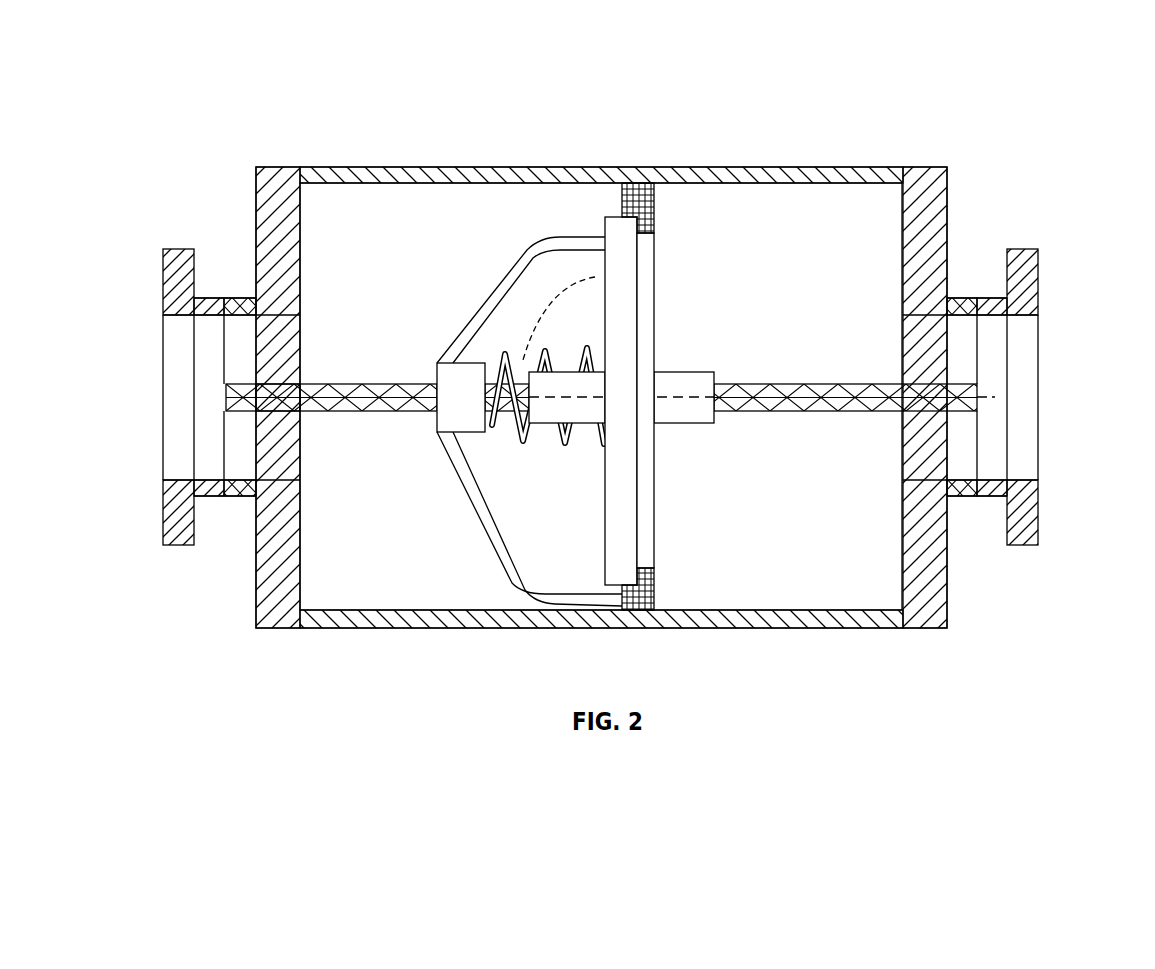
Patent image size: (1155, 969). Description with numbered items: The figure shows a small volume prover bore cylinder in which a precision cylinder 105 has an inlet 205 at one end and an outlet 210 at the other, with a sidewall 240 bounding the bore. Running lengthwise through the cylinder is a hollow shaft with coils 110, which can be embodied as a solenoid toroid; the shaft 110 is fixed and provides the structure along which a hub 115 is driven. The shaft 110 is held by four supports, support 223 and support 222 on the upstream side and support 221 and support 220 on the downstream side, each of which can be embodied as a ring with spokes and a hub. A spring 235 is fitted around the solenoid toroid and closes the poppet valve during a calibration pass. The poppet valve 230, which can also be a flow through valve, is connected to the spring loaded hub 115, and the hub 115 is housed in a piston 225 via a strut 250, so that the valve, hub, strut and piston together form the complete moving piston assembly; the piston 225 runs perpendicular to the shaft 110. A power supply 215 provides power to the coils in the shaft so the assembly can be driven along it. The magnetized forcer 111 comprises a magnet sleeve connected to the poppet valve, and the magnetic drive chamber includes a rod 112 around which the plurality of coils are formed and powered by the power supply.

The precision cylinder 105 is at (955, 82).
The hollow shaft with coils 110 is at (372, 385).
The magnetized forcer 111 is at (525, 360).
The rod 112 is at (308, 408).
The hub 115 is at (673, 385).
The inlet 205 is at (188, 400).
The outlet 210 is at (1017, 400).
The power supply 215 is at (977, 403).
The support 220 is at (960, 497).
The support 221 is at (962, 304).
The support 222 is at (238, 497).
The support 223 is at (240, 304).
The piston 225 is at (653, 590).
The poppet valve 230 is at (622, 235).
The spring 235 is at (518, 440).
The sidewall 240 is at (643, 628).
The strut 250 is at (458, 475).